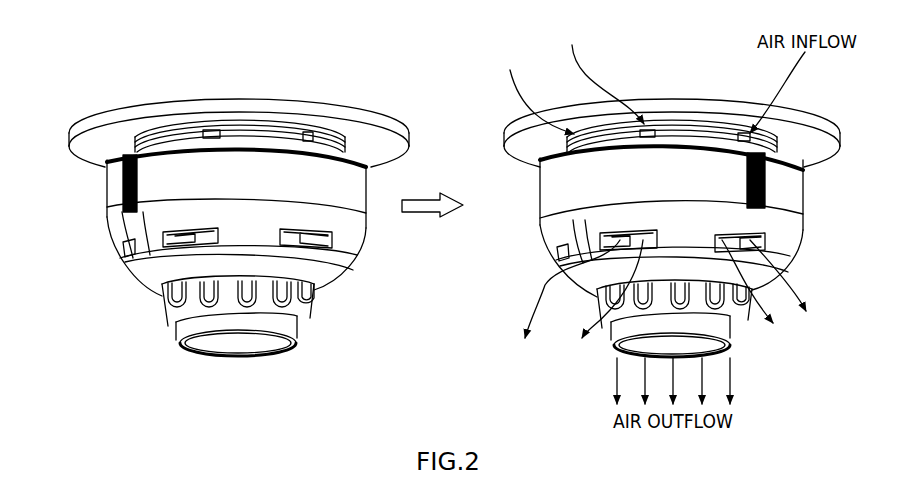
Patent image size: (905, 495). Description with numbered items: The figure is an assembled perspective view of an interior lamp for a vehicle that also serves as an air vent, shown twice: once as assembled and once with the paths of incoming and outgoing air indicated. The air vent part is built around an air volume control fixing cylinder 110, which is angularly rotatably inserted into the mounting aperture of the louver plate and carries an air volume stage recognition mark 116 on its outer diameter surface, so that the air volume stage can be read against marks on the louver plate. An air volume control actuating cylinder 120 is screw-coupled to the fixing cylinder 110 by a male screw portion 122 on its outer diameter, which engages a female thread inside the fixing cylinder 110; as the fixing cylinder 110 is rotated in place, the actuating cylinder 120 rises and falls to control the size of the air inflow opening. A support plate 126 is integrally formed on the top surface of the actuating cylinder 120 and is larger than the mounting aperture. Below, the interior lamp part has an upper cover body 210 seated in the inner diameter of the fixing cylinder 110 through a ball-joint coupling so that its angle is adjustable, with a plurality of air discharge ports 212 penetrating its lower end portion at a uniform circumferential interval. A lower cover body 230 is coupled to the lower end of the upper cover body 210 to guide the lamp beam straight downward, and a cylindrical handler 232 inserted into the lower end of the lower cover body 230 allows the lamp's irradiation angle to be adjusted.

The air volume control fixing cylinder 110 is at (96, 205).
The air volume stage recognition mark 116 is at (122, 158).
The air volume control actuating cylinder 120 is at (562, 139).
The male screw portion 122 is at (768, 136).
The support plate 126 is at (240, 107).
The upper cover body 210 is at (108, 244).
The air discharge port 212 is at (168, 278).
The lower cover body 230 is at (167, 304).
The handler 232 is at (178, 340).